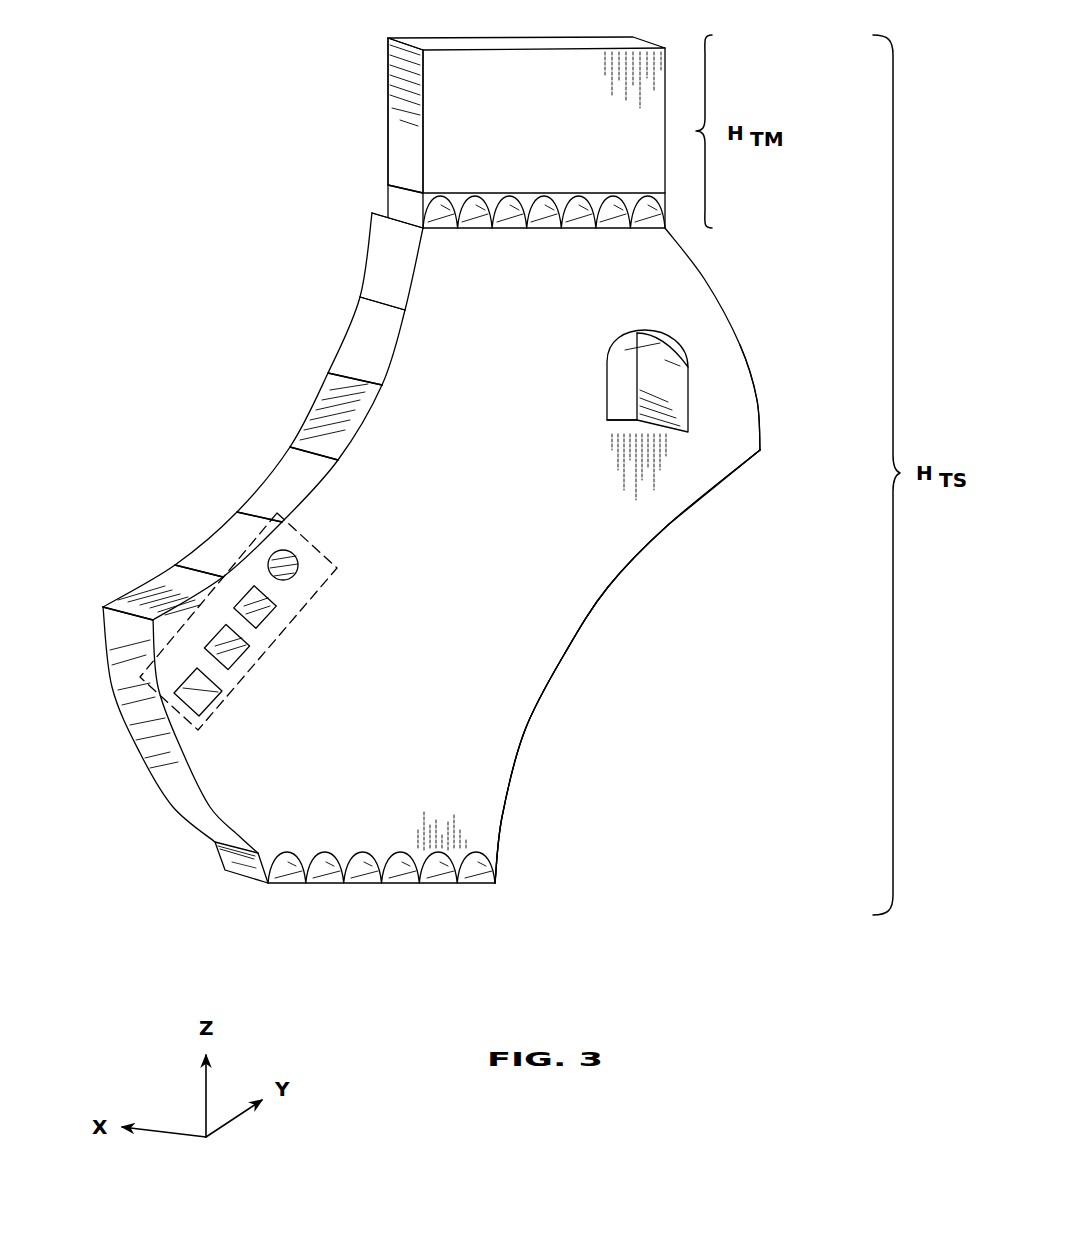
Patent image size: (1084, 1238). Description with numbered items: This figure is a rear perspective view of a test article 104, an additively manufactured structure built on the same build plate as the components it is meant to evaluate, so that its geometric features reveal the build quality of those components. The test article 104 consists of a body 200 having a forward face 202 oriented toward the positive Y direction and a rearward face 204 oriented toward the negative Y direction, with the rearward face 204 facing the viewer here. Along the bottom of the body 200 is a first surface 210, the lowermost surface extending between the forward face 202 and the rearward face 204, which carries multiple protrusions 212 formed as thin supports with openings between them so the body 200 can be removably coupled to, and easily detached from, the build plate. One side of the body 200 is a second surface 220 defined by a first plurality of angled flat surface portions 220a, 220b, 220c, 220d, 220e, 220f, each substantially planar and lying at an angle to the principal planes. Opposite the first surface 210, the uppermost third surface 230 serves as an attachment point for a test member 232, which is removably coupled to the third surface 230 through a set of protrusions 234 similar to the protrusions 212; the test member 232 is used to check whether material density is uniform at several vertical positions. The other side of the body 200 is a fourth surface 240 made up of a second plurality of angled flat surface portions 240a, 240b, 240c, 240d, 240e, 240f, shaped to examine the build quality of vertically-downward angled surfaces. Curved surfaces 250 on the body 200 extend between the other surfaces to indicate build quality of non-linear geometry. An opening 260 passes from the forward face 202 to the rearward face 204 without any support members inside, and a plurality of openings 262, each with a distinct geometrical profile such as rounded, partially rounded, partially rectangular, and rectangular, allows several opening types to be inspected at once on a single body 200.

The test article 104 is at (832, 278).
The body 200 is at (218, 782).
The forward face 202 is at (748, 425).
The rearward face 204 is at (536, 466).
The first surface 210 is at (357, 880).
The protrusions 212 is at (268, 885).
The second surface 220 is at (188, 260).
The angled flat surface portion 220a is at (140, 602).
The angled flat surface portion 220b is at (218, 548).
The angled flat surface portion 220c is at (267, 492).
The angled flat surface portion 220d is at (318, 435).
The angled flat surface portion 220e is at (355, 360).
The angled flat surface portion 220f is at (378, 278).
The third surface 230 is at (368, 200).
The test member 232 is at (403, 117).
The set of protrusions 234 is at (494, 212).
The fourth surface 240 is at (716, 713).
The angled flat surface portion 240a is at (733, 470).
The angled flat surface portion 240b is at (668, 525).
The angled flat surface portion 240c is at (608, 587).
The angled flat surface portion 240d is at (565, 653).
The angled flat surface portion 240e is at (525, 730).
The angled flat surface portion 240f is at (502, 817).
The curved surface 250 is at (148, 738).
The opening 260 is at (625, 372).
The plurality of openings 262 is at (270, 650).